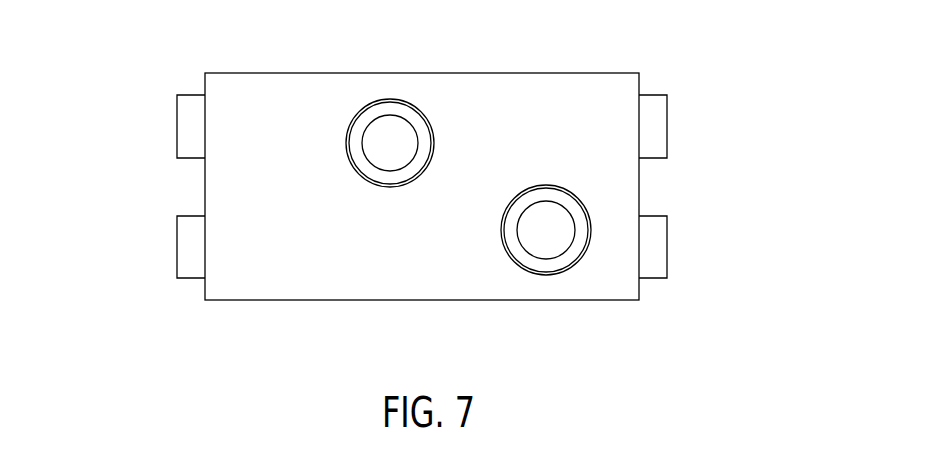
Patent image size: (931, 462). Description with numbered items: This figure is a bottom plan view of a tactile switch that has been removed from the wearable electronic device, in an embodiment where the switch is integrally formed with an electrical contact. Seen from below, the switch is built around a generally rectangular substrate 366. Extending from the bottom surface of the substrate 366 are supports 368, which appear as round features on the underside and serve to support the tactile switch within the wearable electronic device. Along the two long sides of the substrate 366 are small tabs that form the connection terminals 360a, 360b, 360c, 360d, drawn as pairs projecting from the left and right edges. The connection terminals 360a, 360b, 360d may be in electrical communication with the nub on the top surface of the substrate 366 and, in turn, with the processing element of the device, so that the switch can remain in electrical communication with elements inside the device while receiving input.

The substrate 366 is at (580, 87).
The support 368 is at (552, 230).
The connection terminal 360a is at (653, 123).
The connection terminal 360b is at (657, 258).
The tab 360c is at (190, 247).
The connection terminal 360d is at (190, 130).